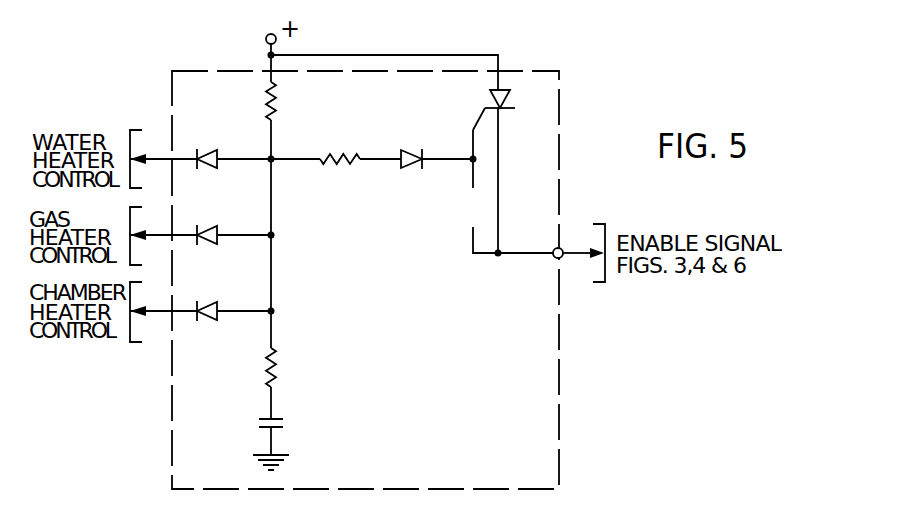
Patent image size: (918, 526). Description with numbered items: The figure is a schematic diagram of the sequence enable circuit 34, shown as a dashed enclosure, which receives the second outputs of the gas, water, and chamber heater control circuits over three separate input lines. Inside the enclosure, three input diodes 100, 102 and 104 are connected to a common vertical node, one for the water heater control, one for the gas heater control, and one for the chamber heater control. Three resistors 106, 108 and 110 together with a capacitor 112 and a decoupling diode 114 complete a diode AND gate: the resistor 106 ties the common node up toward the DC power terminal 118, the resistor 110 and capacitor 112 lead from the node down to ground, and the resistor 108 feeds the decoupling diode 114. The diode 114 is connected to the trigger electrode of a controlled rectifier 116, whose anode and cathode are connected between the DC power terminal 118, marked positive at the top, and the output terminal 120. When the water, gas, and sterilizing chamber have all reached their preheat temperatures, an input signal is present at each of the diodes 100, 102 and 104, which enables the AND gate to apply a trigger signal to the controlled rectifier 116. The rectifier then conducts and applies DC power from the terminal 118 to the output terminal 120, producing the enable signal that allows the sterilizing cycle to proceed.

The sequence enable circuit 34 is at (528, 70).
The input diode 100 is at (207, 150).
The input diode 102 is at (207, 229).
The input diode 104 is at (207, 305).
The resistor 106 is at (278, 102).
The resistor 108 is at (352, 151).
The resistor 110 is at (276, 362).
The capacitor 112 is at (284, 420).
The decoupling diode 114 is at (413, 150).
The controlled rectifier 116 is at (511, 106).
The DC power terminal 118 is at (265, 39).
The output terminal 120 is at (554, 258).